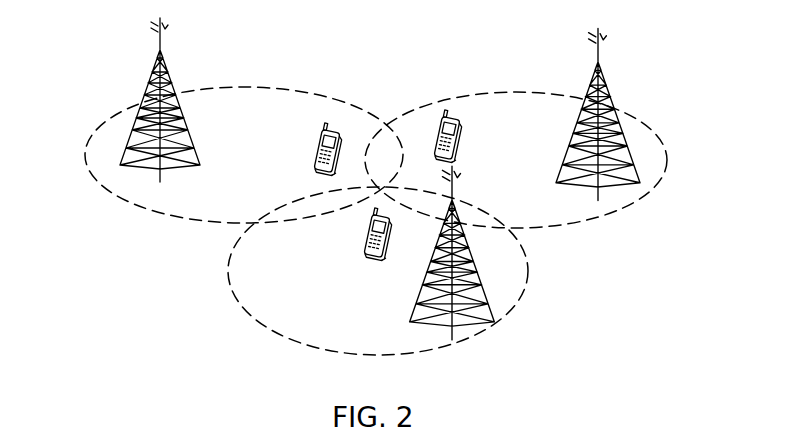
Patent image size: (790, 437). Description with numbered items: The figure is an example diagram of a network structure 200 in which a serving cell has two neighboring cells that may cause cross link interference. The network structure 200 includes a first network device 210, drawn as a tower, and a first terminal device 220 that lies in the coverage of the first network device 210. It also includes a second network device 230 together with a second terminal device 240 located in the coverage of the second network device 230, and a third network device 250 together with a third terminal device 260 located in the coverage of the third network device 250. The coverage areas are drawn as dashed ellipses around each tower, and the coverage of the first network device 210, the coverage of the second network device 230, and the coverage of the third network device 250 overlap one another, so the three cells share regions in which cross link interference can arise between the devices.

The network structure 200 is at (377, 184).
The first network device 210 is at (155, 58).
The first terminal device 220 is at (314, 145).
The second network device 230 is at (608, 72).
The second terminal device 240 is at (462, 125).
The third network device 250 is at (453, 211).
The third terminal device 260 is at (369, 255).